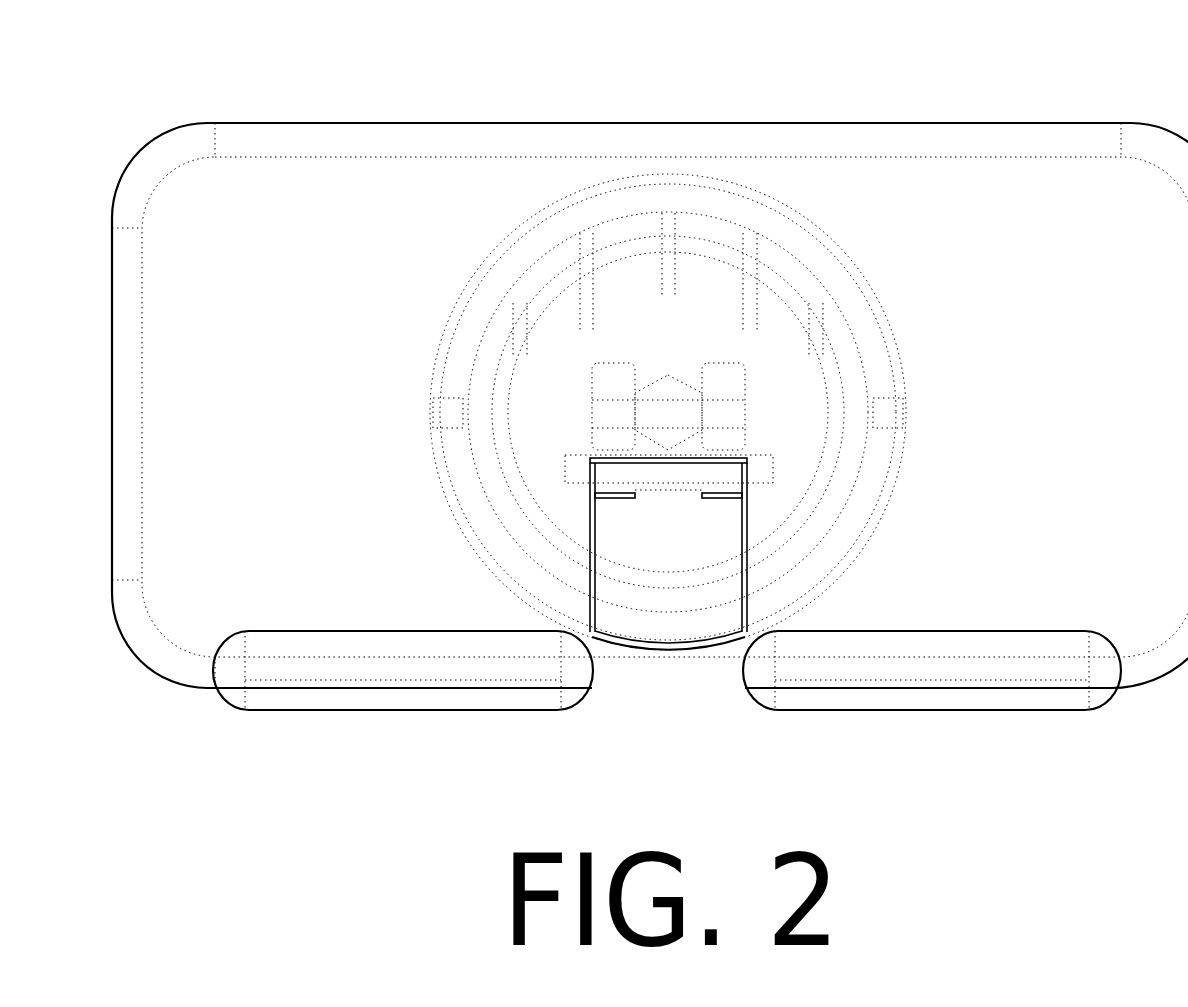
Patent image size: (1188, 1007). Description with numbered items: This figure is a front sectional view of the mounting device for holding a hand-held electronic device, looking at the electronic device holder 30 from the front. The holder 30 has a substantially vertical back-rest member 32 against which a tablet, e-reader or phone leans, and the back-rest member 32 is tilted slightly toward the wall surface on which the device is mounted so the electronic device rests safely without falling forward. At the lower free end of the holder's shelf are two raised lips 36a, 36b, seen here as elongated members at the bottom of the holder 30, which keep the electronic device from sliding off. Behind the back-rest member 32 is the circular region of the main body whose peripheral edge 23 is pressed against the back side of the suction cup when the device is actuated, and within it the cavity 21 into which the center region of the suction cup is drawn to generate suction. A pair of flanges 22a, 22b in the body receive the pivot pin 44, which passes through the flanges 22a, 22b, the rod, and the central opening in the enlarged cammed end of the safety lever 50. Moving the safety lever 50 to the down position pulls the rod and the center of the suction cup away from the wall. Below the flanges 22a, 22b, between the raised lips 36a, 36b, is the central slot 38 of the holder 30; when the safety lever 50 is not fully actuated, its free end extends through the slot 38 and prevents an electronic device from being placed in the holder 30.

The electronic device holder 30 is at (352, 98).
The back-rest member 32 is at (915, 188).
The peripheral edge 23 is at (708, 198).
The cavity 21 is at (633, 292).
The flange 22a is at (603, 372).
The flange 22b is at (730, 372).
The pivot pin 44 is at (603, 410).
The safety lever 50 is at (652, 487).
The slot 38 is at (683, 673).
The raised lip 36a is at (400, 670).
The raised lip 36b is at (1010, 670).